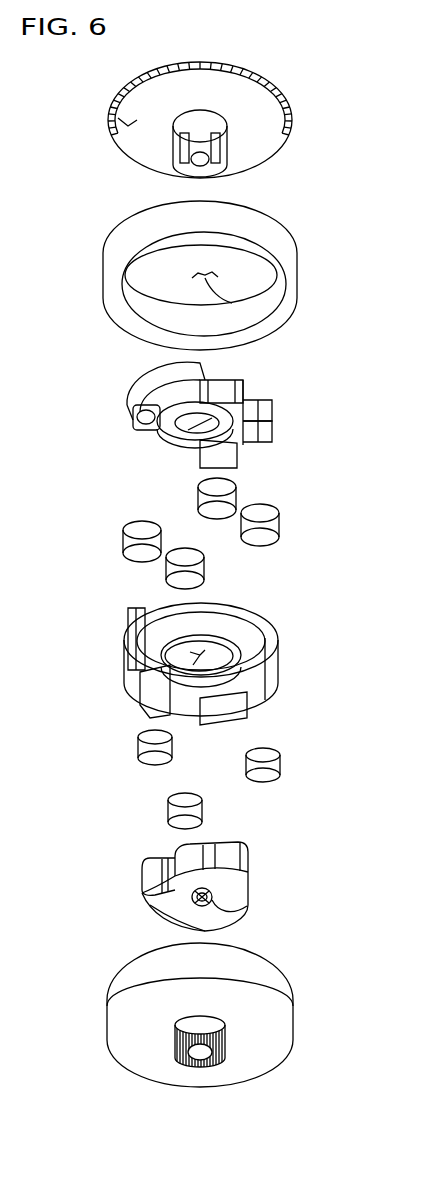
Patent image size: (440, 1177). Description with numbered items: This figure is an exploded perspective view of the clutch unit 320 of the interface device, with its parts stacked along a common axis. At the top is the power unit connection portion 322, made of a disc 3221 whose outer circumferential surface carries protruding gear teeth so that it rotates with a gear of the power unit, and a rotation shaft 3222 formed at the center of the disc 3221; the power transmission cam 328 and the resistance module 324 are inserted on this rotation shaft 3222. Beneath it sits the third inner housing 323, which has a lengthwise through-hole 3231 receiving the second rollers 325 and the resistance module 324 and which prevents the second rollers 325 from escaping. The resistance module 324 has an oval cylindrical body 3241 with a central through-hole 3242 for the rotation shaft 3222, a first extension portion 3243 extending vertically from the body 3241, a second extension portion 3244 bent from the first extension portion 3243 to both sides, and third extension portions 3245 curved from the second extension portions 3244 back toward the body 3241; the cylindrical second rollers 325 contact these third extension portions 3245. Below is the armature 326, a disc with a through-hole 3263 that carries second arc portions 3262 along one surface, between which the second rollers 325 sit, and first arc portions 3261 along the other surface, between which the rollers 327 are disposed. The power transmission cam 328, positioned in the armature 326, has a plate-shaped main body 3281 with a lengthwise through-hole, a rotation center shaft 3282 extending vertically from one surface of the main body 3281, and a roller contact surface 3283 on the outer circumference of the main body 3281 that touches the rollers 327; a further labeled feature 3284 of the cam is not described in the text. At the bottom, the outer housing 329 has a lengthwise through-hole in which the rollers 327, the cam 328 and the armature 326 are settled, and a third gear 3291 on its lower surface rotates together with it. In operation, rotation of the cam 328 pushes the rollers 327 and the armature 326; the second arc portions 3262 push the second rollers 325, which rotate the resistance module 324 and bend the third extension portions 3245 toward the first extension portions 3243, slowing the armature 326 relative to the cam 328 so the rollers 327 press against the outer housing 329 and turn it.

The clutch unit 320 is at (330, 1084).
The power unit connection portion 322 is at (292, 170).
The disc 3221 is at (112, 122).
The rotation shaft 3222 is at (227, 123).
The third inner housing 323 is at (286, 250).
The through-hole 3231 is at (232, 303).
The resistance module 324 is at (287, 453).
The body 3241 is at (240, 410).
The through-hole 3242 is at (155, 440).
The first extension portion 3243 is at (240, 450).
The second extension portion 3244 is at (235, 445).
The third extension portion 3245 is at (243, 415).
The second rollers 325 is at (279, 520).
The armature 326 is at (299, 672).
The first arc portions 3261 is at (258, 712).
The second arc portions 3262 is at (126, 632).
The through-hole 3263 is at (126, 660).
The roller 327 is at (277, 762).
The power transmission cam 328 is at (268, 887).
The main body 3281 is at (142, 895).
The rotation center shaft 3282 is at (175, 848).
The roller contact surface 3283 is at (183, 927).
The bracket hole 3284 is at (243, 906).
The outer housing 329 is at (293, 1000).
The third gear 3291 is at (226, 1054).